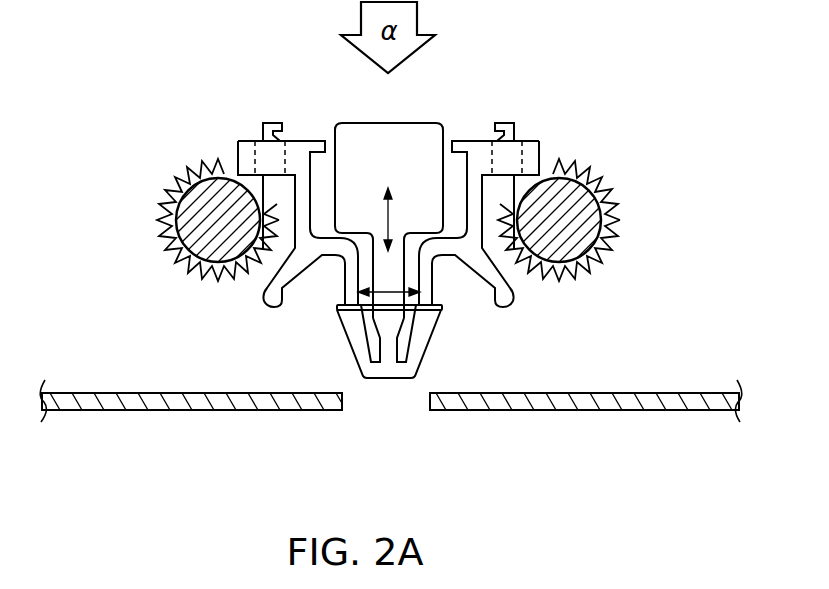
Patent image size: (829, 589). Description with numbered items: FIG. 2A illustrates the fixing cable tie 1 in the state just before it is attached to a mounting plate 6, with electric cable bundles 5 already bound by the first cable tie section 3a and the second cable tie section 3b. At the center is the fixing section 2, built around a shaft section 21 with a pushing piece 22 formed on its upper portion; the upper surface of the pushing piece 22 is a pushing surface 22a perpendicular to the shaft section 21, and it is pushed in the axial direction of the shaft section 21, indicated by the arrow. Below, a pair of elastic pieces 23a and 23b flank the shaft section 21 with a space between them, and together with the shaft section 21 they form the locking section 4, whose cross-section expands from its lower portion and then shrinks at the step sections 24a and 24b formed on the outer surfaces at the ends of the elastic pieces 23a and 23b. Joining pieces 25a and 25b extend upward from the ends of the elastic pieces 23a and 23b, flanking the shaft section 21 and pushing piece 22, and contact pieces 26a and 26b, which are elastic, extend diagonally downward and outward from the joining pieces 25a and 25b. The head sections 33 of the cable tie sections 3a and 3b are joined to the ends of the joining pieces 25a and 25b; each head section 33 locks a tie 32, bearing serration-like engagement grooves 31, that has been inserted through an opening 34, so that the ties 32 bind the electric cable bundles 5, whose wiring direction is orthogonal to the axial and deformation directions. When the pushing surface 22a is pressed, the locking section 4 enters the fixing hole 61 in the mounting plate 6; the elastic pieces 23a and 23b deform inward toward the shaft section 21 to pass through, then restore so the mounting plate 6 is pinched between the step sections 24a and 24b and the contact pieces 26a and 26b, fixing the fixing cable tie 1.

The fixing cable tie 1 is at (580, 80).
The fixing section 2 is at (455, 80).
The first cable tie section 3a is at (610, 144).
The second cable tie section 3b is at (182, 127).
The locking section 4 is at (380, 391).
The electric cable bundle 5 is at (186, 172).
The mounting plate 6 is at (565, 393).
The shaft section 21 is at (398, 333).
The pushing piece 22 is at (398, 132).
The pushing surface 22a is at (378, 122).
The elastic piece 23a is at (422, 338).
The elastic piece 23b is at (355, 338).
The step section 24a is at (442, 312).
The step section 24b is at (335, 312).
The joining piece 25a is at (425, 284).
The joining piece 25b is at (352, 284).
The contact piece 26a is at (514, 300).
The contact piece 26b is at (263, 300).
The engagement grooves 31 is at (165, 240).
The tie 32 is at (196, 200).
The head section 33 is at (307, 136).
The opening 34 is at (253, 152).
The fixing hole 61 is at (420, 408).